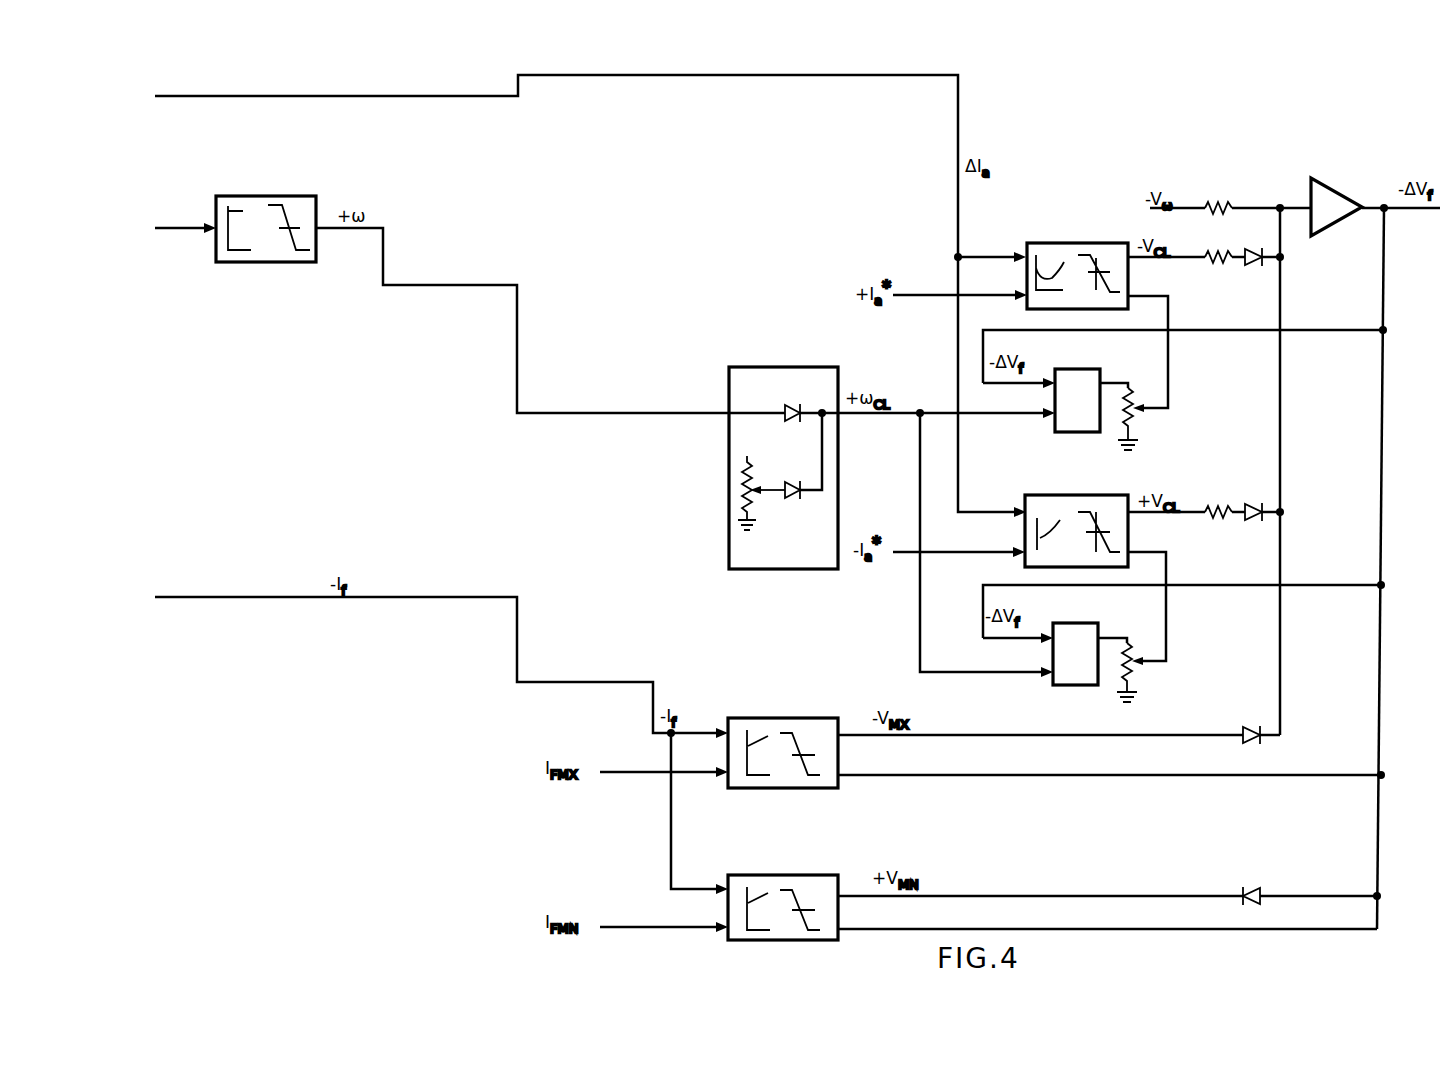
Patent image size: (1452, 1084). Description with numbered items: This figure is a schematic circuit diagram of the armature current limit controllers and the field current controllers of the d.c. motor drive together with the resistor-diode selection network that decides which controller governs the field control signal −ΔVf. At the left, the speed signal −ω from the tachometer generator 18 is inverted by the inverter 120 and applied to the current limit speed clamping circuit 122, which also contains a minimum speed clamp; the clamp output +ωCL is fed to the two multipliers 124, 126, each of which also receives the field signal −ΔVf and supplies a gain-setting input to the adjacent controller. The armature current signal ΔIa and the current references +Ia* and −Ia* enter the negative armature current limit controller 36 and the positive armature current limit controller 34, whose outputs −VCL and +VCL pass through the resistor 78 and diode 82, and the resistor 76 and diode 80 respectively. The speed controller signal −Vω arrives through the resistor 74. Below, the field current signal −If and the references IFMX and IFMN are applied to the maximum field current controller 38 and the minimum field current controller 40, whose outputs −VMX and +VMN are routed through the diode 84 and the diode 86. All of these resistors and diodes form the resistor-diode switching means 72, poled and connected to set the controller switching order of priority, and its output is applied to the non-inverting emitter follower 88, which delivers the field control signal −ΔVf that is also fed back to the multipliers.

The tachometer generator 18 is at (156, 227).
The inverter 120 is at (293, 196).
The current limit speed clamping circuit 122 is at (740, 569).
The negative armature current limit controller 36 is at (1016, 250).
The positive armature current limit controller 34 is at (1016, 506).
The multiplier 124 is at (1092, 370).
The multiplier 126 is at (1082, 625).
The resistor 74 is at (1215, 204).
The resistor 78 is at (1218, 254).
The diode 82 is at (1256, 253).
The resistor 76 is at (1216, 509).
The diode 80 is at (1256, 508).
The non-inverting emitter follower 88 is at (1327, 190).
The resistor-diode switching means 72 is at (1219, 634).
The maximum field current controller 38 is at (828, 790).
The minimum field current controller 40 is at (828, 944).
The diode 84 is at (1252, 746).
The diode 86 is at (1250, 893).